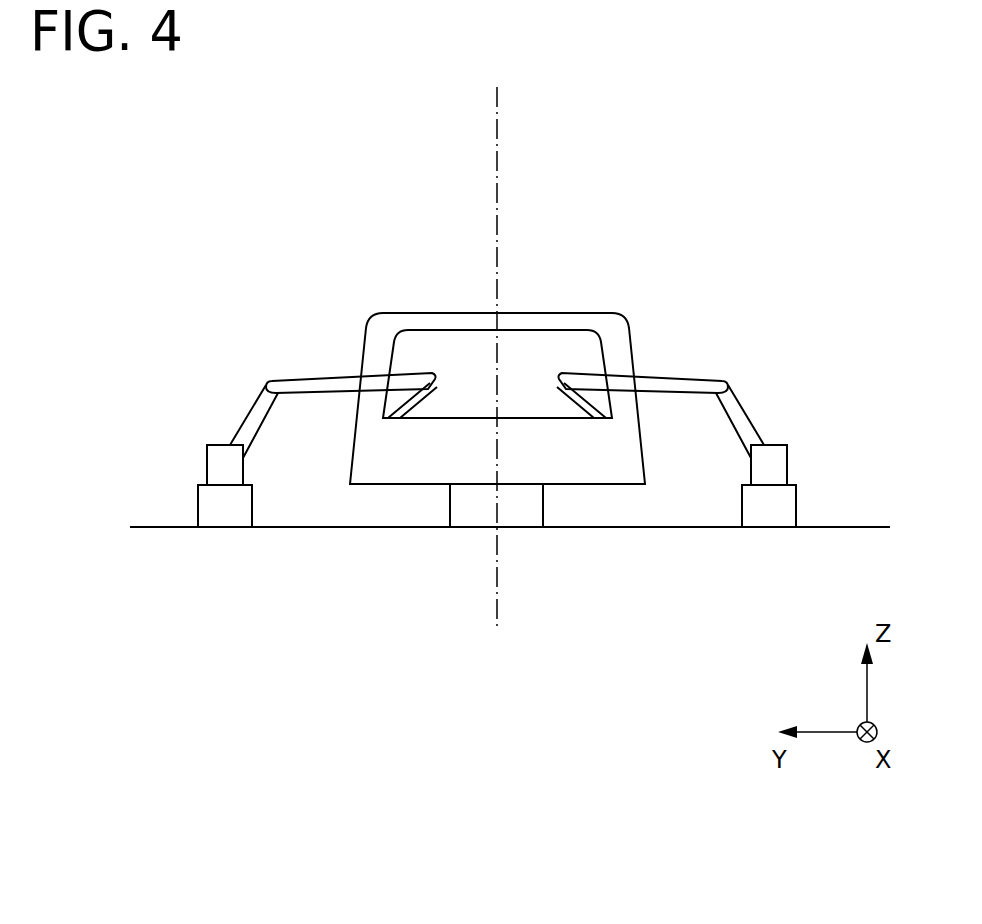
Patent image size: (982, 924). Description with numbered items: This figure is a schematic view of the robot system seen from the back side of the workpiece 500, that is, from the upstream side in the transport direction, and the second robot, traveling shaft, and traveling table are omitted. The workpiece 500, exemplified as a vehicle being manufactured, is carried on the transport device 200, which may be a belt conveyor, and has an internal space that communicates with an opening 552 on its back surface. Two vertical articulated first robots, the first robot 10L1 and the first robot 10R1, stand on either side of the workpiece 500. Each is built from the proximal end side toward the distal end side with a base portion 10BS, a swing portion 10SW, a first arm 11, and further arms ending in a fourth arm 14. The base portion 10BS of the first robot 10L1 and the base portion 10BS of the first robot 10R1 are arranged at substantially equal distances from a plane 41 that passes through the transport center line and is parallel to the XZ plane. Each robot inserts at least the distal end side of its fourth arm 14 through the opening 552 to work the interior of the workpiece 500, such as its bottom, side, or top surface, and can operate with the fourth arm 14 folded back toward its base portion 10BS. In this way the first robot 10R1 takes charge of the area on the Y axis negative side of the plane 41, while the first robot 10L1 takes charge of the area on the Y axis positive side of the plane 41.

The plane 41 is at (507, 173).
The workpiece 500 is at (601, 290).
The opening on the back surface 552 is at (443, 348).
The fourth arm 14 is at (417, 393).
The first robot 10L1 is at (188, 422).
The first robot 10R1 is at (785, 398).
The first arm 11 is at (255, 417).
The swing portion 10SW is at (225, 462).
The base portion 10BS is at (213, 512).
The transport device 200 is at (517, 512).